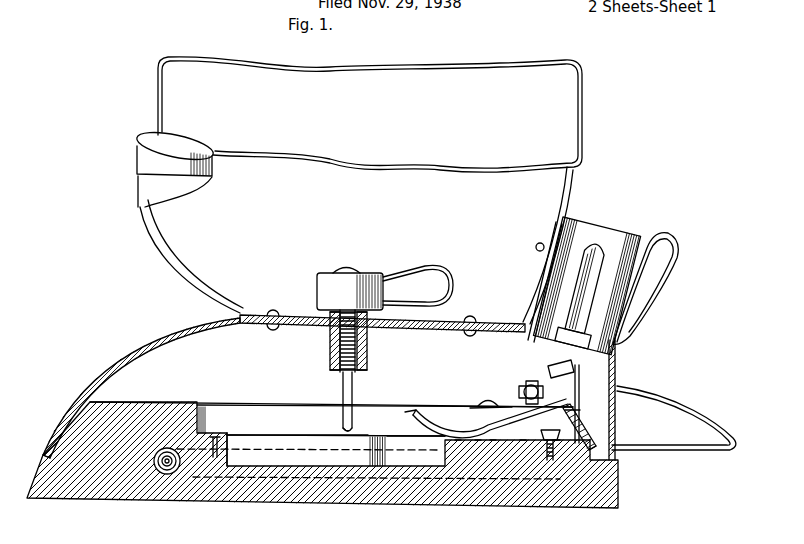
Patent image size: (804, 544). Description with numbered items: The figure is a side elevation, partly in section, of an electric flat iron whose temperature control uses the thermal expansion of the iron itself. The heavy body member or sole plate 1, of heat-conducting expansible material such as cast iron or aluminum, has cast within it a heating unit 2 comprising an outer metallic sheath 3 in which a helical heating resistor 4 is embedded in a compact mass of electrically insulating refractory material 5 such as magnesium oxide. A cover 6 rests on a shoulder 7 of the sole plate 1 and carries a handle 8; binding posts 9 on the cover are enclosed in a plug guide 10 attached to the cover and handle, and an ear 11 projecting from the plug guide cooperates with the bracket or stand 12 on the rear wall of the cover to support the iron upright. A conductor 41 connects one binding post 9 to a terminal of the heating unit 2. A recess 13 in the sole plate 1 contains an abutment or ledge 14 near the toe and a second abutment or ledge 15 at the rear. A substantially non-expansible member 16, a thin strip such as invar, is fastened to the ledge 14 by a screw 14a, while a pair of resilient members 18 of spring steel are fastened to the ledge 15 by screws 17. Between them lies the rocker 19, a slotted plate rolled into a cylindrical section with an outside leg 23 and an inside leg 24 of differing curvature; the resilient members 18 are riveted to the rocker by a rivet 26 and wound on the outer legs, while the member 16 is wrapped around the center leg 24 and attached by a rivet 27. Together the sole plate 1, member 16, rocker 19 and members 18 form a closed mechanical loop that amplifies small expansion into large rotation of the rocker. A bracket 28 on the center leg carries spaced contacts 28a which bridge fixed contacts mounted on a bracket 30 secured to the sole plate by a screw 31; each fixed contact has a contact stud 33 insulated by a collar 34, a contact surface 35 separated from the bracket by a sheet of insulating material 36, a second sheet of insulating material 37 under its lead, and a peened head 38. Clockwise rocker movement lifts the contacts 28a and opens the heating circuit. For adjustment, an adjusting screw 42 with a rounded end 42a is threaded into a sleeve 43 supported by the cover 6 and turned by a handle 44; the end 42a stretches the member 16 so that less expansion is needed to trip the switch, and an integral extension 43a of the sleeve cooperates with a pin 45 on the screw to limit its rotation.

The sole plate 1 is at (112, 487).
The heating unit 2 is at (178, 470).
The outer metallic sheath 3 is at (154, 470).
The helical heating resistor 4 is at (167, 474).
The electrically insulating refractory material 5 is at (163, 448).
The cover 6 is at (108, 372).
The shoulder 7 is at (50, 452).
The handle 8 is at (567, 97).
The binding posts 9 is at (600, 282).
The plug guide 10 is at (573, 232).
The ear 11 is at (680, 250).
The bracket or stand 12 is at (700, 412).
The recess 13 is at (267, 416).
The abutment or ledge 14 is at (240, 457).
The screw 14a is at (217, 430).
The second abutment or ledge 15 is at (440, 456).
The substantially non-expansible member 16 is at (255, 433).
The screws 17 is at (592, 424).
The resilient members 18 is at (478, 440).
The rocker 19 is at (435, 425).
The outside leg 23 is at (462, 440).
The inside leg 24 is at (493, 440).
The rivet 26 is at (413, 416).
The rivet 27 is at (523, 440).
The bracket 28 is at (557, 440).
The spaced contacts 28a is at (580, 412).
The bracket 30 is at (480, 401).
The screw 31 is at (487, 398).
The contact stud 33 is at (532, 382).
The collar 34 is at (550, 436).
The contact surface 35 is at (579, 397).
The sheet of insulating material 36 is at (574, 377).
The sheet of insulating material 37 is at (520, 396).
The head 38 is at (523, 387).
The conductor 41 is at (596, 440).
The adjusting screw 42 is at (353, 394).
The rounded end 42a is at (345, 430).
The sleeve 43 is at (367, 345).
The integral extension 43a is at (336, 385).
The handle 44 is at (405, 277).
The pin 45 is at (352, 372).